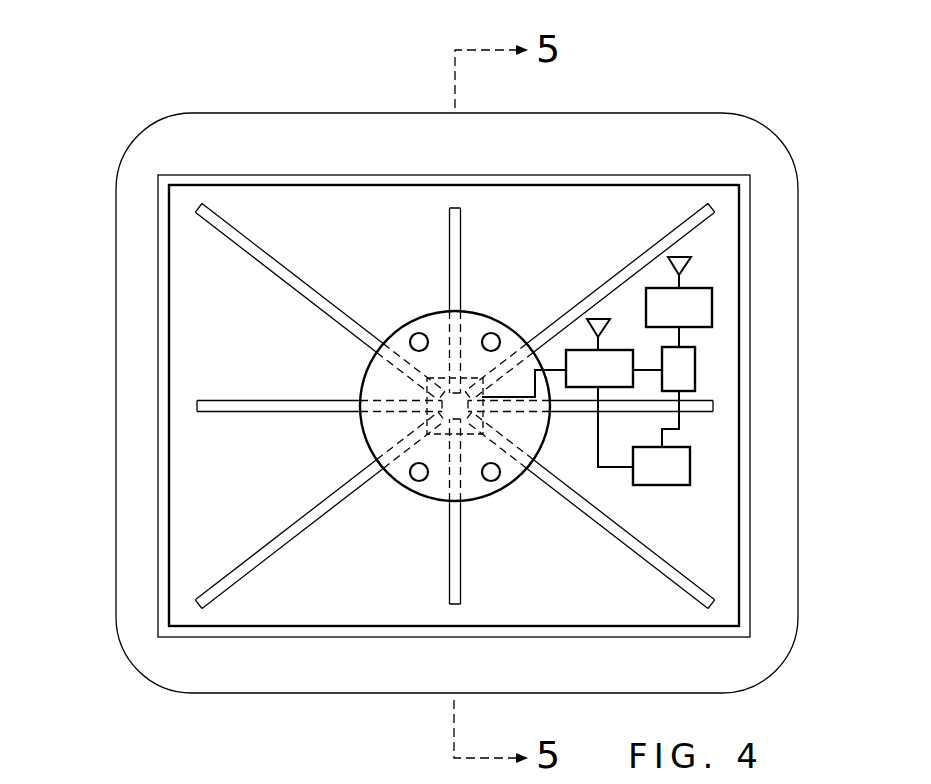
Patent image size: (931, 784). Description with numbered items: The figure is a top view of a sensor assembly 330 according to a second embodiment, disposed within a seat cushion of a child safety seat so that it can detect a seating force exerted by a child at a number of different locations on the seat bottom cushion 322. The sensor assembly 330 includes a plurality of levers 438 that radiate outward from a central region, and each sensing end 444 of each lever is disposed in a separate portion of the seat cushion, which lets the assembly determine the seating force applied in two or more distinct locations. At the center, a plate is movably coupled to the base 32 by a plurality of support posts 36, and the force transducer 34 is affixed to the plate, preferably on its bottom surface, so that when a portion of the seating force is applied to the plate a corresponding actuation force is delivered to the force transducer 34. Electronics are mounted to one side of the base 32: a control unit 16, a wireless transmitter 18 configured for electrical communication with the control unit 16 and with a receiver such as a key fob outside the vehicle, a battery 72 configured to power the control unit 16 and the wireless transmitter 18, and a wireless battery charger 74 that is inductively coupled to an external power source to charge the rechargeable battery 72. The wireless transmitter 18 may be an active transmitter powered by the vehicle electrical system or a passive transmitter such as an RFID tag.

The seat bottom cushion 322 is at (653, 113).
The sensor assembly 330 is at (775, 160).
The base 32 is at (190, 262).
The force transducer 34 is at (432, 390).
The support posts 36 is at (419, 333).
The plurality of levers 438 is at (446, 556).
The sensing end 444 is at (258, 413).
The wireless transmitter 18 is at (582, 350).
The wireless battery charger 74 is at (712, 297).
The battery 72 is at (695, 368).
The control unit 16 is at (690, 463).